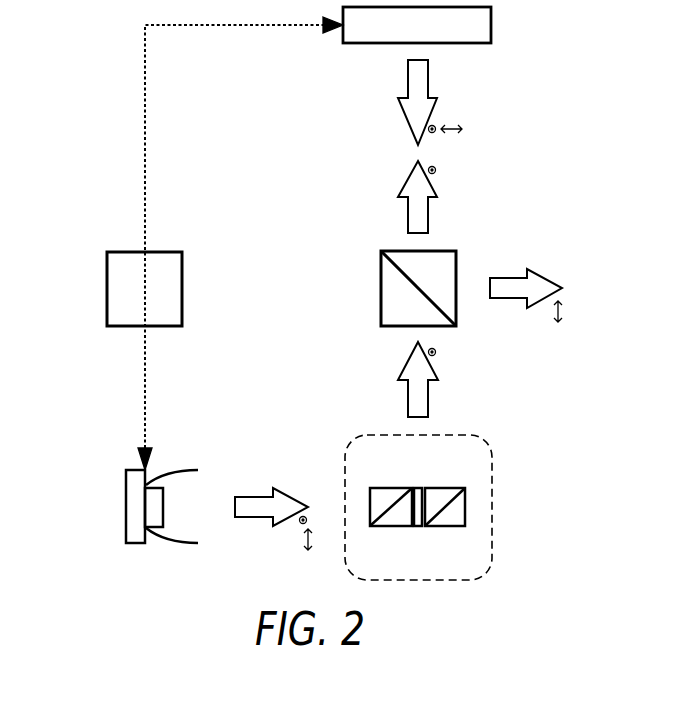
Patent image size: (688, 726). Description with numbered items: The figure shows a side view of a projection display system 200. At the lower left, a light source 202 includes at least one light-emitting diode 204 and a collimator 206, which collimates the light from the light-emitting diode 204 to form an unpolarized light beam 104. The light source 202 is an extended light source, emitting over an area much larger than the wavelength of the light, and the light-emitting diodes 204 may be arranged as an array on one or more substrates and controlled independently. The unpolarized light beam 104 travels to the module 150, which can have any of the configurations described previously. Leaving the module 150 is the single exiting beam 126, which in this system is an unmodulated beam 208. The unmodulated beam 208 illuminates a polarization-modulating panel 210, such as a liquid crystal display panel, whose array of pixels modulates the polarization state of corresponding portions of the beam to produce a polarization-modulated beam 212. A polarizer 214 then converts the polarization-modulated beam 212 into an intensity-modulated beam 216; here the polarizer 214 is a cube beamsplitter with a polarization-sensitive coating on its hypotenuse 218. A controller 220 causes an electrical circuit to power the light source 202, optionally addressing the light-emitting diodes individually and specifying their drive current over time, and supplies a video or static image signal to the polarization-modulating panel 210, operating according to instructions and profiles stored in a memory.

The projection display system 200 is at (114, 88).
The polarization-modulating panel 210 is at (491, 27).
The polarization-modulated beam 212 is at (407, 79).
The unmodulated beam 208 is at (407, 207).
The polarizer 214 is at (380, 286).
The hypotenuse 218 is at (435, 310).
The intensity-modulated beam 216 is at (515, 277).
The single exiting beam 126 is at (408, 390).
The controller 220 is at (106, 286).
The light source 202 is at (125, 505).
The light-emitting diode 204 is at (152, 528).
The collimator 206 is at (187, 545).
The unpolarized light beam 104 is at (260, 496).
The module 150 is at (493, 505).